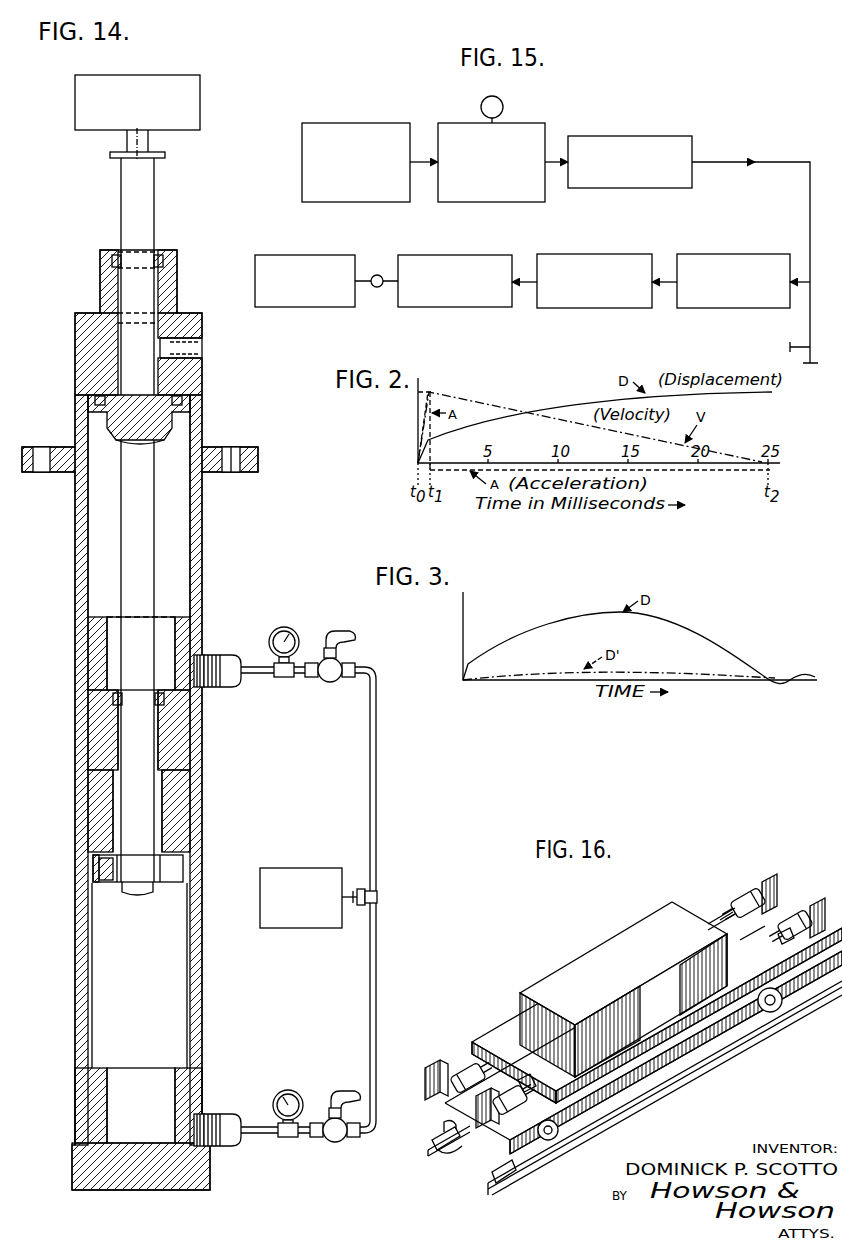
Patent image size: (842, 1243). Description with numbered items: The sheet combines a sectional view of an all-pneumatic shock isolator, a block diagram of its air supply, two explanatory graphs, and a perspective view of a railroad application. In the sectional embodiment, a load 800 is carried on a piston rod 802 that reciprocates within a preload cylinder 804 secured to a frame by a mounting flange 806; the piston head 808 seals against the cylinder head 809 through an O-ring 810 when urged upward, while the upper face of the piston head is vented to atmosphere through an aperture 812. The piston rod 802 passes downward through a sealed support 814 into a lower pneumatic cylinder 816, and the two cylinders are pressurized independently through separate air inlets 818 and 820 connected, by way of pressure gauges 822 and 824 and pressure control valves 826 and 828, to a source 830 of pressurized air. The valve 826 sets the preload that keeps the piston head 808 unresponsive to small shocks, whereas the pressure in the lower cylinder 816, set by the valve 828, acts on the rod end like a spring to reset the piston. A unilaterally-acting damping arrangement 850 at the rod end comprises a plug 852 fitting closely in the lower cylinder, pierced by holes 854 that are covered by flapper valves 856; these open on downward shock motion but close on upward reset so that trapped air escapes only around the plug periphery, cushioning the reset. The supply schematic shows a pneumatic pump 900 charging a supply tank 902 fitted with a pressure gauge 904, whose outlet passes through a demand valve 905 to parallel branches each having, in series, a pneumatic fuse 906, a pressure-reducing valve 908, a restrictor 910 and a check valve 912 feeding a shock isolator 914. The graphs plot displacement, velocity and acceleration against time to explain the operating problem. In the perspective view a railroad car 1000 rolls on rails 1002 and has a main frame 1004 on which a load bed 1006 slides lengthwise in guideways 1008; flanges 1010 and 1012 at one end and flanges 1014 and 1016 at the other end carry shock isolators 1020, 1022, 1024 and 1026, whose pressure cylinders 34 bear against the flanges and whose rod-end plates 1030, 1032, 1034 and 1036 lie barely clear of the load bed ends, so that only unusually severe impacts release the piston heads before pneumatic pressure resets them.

In FIG. 14, the load 800 is at (181, 75).
In FIG. 14, the piston rod 802 is at (158, 168).
In FIG. 14, the preload cylinder 804 is at (203, 527).
In FIG. 14, the mounting flange 806 is at (250, 456).
In FIG. 14, the piston head 808 is at (183, 406).
In FIG. 14, the cylinder head 809 is at (190, 380).
In FIG. 14, the O-ring 810 is at (185, 390).
In FIG. 14, the aperture 812 is at (198, 348).
In FIG. 14, the sealed support 814 is at (200, 739).
In FIG. 14, the lower pneumatic cylinder 816 is at (202, 958).
In FIG. 14, the air inlet 818 is at (216, 658).
In FIG. 14, the air inlet 820 is at (216, 1116).
In FIG. 14, the pressure gauge 822 is at (284, 627).
In FIG. 14, the pressure gauge 824 is at (288, 1090).
In FIG. 14, the pressure control valve 826 is at (326, 682).
In FIG. 14, the pressure control valve 828 is at (338, 1143).
In FIG. 14, the source of pressurized air 830 is at (324, 861).
In FIG. 14, the unilaterally-acting damping arrangement 850 is at (165, 890).
In FIG. 14, the plug 852 is at (184, 868).
In FIG. 14, the hole 854 is at (108, 884).
In FIG. 14, the flapper valve 856 is at (92, 860).
In FIG. 15, the pneumatic pump 900 is at (350, 126).
In FIG. 15, the supply tank 902 is at (530, 126).
In FIG. 15, the pressure gauge 904 is at (502, 101).
In FIG. 15, the demand valve 905 is at (662, 137).
In FIG. 15, the pneumatic fuse 906 is at (728, 256).
In FIG. 15, the pressure-reducing valve 908 is at (600, 256).
In FIG. 15, the restrictor 910 is at (458, 256).
In FIG. 15, the check valve 912 is at (377, 274).
In FIG. 15, the shock isolator 914 is at (296, 256).
In FIG. 16, the railroad car 1000 is at (456, 1050).
In FIG. 16, the rails 1002 is at (494, 1182).
In FIG. 16, the main frame 1004 is at (630, 1053).
In FIG. 16, the load bed 1006 is at (528, 1042).
In FIG. 16, the guideways 1008 is at (560, 1085).
In FIG. 16, the flange 1010 is at (441, 1090).
In FIG. 16, the flange 1012 is at (487, 1122).
In FIG. 16, the flange 1014 is at (814, 908).
In FIG. 16, the flange 1016 is at (762, 890).
In FIG. 16, the shock isolator 1020 is at (458, 1072).
In FIG. 16, the shock isolator 1022 is at (530, 1142).
In FIG. 16, the shock isolator 1024 is at (785, 925).
In FIG. 16, the shock isolator 1026 is at (742, 896).
In FIG. 16, the plate 1030 is at (494, 1050).
In FIG. 16, the plate 1032 is at (522, 1085).
In FIG. 16, the plate 1034 is at (768, 936).
In FIG. 16, the plate 1036 is at (720, 918).
In FIG. 16, the pressure cylinder 34 is at (773, 910).